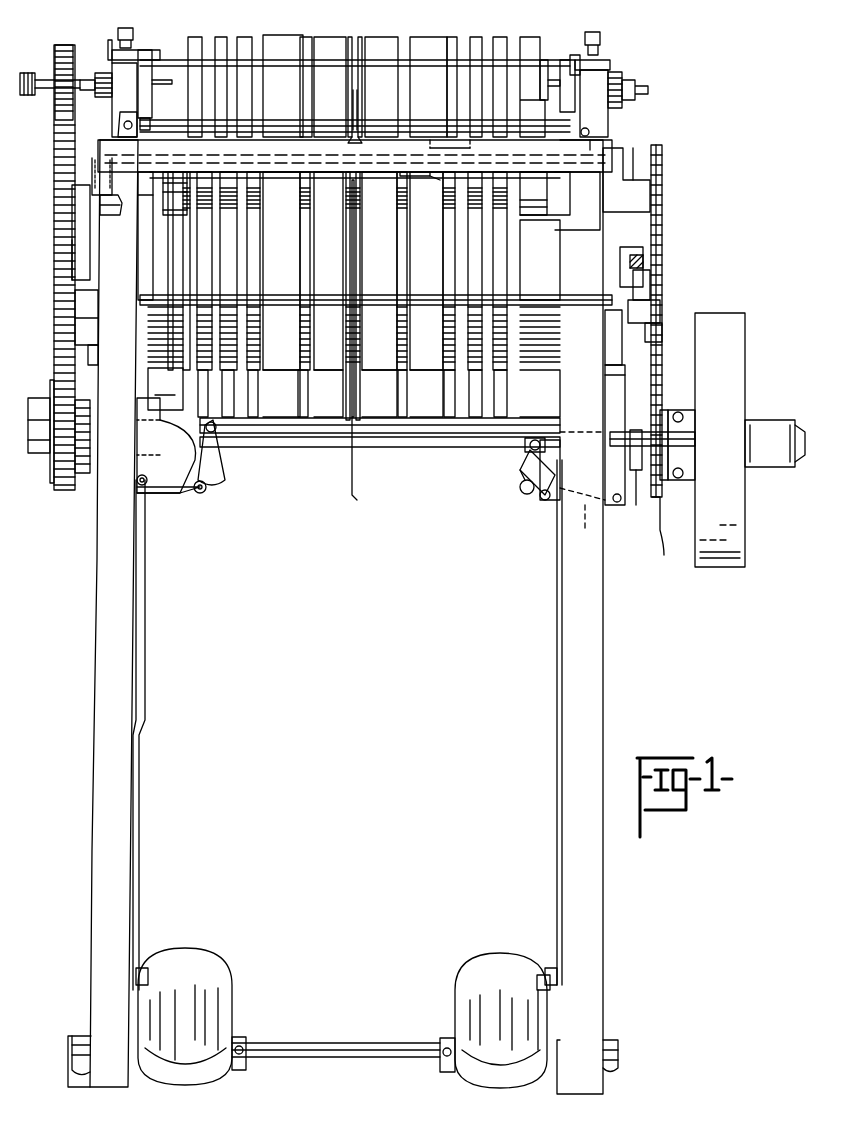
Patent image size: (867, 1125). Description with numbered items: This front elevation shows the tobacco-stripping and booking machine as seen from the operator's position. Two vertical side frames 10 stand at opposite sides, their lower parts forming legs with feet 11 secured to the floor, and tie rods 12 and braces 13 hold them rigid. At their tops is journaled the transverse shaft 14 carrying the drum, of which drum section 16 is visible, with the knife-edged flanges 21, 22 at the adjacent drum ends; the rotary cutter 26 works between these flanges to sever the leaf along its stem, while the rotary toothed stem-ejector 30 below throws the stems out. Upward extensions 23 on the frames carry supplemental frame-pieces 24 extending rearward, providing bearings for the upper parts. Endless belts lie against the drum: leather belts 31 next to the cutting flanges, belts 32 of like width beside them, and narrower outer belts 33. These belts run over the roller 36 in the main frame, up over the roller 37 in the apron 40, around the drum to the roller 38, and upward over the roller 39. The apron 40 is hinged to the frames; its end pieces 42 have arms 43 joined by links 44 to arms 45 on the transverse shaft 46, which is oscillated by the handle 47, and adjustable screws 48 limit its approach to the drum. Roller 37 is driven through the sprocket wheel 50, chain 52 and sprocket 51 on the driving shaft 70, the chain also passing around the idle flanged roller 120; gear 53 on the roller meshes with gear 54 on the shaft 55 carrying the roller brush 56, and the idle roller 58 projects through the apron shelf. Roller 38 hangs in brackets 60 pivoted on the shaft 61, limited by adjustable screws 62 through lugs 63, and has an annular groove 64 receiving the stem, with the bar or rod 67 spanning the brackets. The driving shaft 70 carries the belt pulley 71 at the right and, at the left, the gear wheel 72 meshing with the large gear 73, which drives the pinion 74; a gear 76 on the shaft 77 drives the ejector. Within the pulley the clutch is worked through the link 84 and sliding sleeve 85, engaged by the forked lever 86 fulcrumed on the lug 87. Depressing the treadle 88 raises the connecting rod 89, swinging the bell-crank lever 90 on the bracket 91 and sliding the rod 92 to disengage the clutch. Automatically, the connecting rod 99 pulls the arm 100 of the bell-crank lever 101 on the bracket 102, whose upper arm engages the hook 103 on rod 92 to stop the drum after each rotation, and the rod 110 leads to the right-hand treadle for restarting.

The side frames 10 is at (72, 540).
The feet 11 is at (68, 1068).
The tie rods 12 is at (345, 1043).
The braces 13 is at (150, 483).
The transverse shaft 14 is at (560, 235).
The drum section 16 is at (40, 60).
The flange 21 is at (360, 210).
The flange 22 is at (344, 276).
The extensions 23 is at (690, 118).
The supplemental frame-pieces 24 is at (112, 53).
The cutter 26 is at (360, 85).
The rotary toothed stem-ejector 30 is at (358, 460).
The leather belts 31 is at (337, 271).
The belts 32 is at (354, 202).
The outer belts 33 is at (247, 37).
The roller 36 is at (405, 417).
The roller 37 is at (533, 193).
The roller 38 is at (532, 87).
The roller 39 is at (306, 37).
The apron 40 is at (270, 172).
The end pieces 42 is at (620, 205).
The arms 43 is at (622, 262).
The links 44 is at (75, 322).
The arms 45 is at (88, 350).
The transverse shaft 46 is at (420, 305).
The handle 47 is at (650, 275).
The adjustable screws 48 is at (592, 136).
The sprocket wheel 50 is at (662, 152).
The sprocket 51 is at (658, 526).
The chain 52 is at (662, 300).
The gear 53 is at (115, 218).
The gear 54 is at (115, 150).
The shaft 55 is at (150, 152).
The roller brush 56 is at (420, 180).
The idle roller 58 is at (448, 158).
The brackets 60 is at (112, 97).
The shaft 61 is at (108, 50).
The adjustable screws 62 is at (125, 28).
The lugs 63 is at (150, 52).
The annular groove 64 is at (358, 130).
The bar or rod 67 is at (545, 60).
The driving shaft 70 is at (372, 447).
The belt pulley 71 is at (745, 375).
The gear wheel 72 is at (58, 490).
The large gear 73 is at (54, 185).
The pinion 74 is at (60, 48).
The gear 76 is at (80, 473).
The shaft 77 is at (148, 390).
The link 84 is at (688, 420).
The sliding sleeve 85 is at (665, 412).
The lever 86 is at (672, 438).
The lug 87 is at (640, 505).
The treadle 88 is at (200, 948).
The connecting rod 89 is at (139, 832).
The bell-crank lever 90 is at (212, 458).
The bracket 91 is at (166, 445).
The rod 92 is at (300, 433).
The connecting rod 99 is at (605, 400).
The arm 100 is at (582, 490).
The bell-crank lever 101 is at (518, 490).
The bracket 102 is at (520, 480).
The hook 103 is at (525, 448).
The rod 110 is at (557, 680).
The idle flanged roller 120 is at (662, 330).